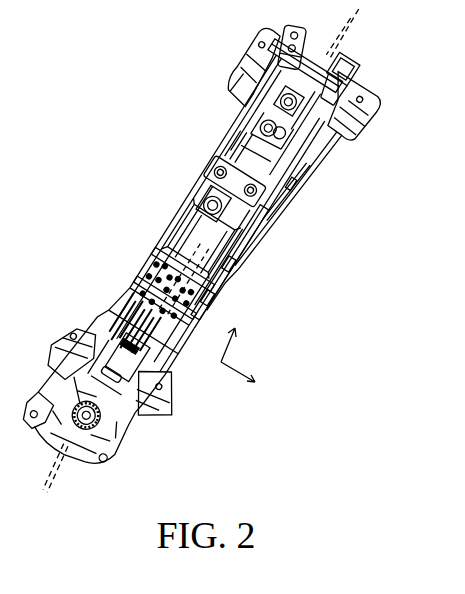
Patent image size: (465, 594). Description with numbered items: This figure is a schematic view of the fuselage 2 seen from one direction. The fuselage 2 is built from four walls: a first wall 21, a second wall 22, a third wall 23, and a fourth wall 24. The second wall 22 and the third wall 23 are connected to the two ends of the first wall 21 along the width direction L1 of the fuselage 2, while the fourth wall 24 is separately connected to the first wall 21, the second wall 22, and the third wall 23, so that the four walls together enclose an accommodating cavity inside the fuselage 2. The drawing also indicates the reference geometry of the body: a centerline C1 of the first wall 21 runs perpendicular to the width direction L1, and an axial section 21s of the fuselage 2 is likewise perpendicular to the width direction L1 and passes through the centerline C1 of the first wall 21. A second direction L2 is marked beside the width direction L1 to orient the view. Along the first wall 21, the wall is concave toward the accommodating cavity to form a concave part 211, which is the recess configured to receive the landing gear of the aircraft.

The fuselage 2 is at (123, 63).
The first wall 21 is at (183, 210).
The axial section 21s is at (342, 48).
The concave part 211 is at (143, 255).
The second wall 22 is at (210, 157).
The third wall 23 is at (225, 277).
The fourth wall 24 is at (128, 290).
The centerline C1 is at (359, 13).
The width direction L1 is at (251, 367).
The second direction L2 is at (244, 335).